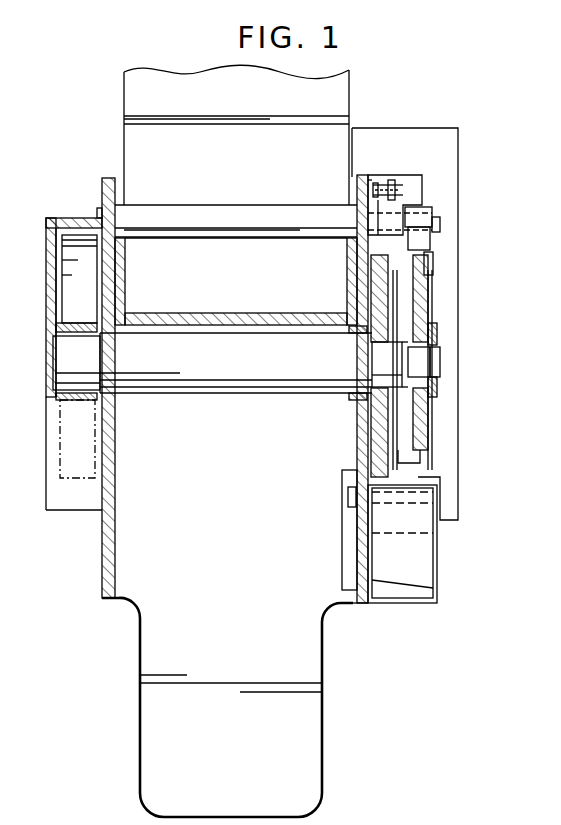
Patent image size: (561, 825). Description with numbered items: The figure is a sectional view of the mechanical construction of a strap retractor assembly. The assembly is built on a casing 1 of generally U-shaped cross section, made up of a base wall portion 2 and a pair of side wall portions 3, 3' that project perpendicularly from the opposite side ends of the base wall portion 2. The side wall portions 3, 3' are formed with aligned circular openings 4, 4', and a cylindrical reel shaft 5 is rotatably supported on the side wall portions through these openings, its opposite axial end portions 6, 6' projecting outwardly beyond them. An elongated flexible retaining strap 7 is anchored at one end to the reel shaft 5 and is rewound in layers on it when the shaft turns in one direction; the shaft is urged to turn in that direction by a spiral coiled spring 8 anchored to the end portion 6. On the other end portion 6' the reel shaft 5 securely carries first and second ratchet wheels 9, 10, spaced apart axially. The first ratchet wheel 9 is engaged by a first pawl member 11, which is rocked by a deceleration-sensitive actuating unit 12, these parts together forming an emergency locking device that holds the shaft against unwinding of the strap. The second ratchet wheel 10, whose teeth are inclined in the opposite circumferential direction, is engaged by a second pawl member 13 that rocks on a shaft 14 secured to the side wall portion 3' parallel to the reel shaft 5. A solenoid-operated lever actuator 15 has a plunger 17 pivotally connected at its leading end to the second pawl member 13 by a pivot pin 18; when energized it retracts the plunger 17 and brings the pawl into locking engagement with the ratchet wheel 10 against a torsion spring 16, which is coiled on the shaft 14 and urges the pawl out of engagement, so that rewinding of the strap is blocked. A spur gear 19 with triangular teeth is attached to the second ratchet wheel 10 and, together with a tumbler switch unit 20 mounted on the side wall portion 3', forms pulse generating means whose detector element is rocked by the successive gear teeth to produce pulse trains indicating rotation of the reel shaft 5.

The casing 1 is at (125, 623).
The base wall portion 2 is at (224, 634).
The side wall portion 3 is at (91, 388).
The side wall portion 3' is at (370, 410).
The circular opening 4 is at (100, 340).
The circular opening 4' is at (345, 341).
The reel shaft 5 is at (218, 395).
The axial end portion 6 is at (76, 435).
The axial end portion 6' is at (343, 410).
The retaining strap 7 is at (230, 167).
The spiral coiled spring 8 is at (76, 232).
The first ratchet wheel 9 is at (372, 447).
The second ratchet wheel 10 is at (434, 258).
The first pawl member 11 is at (405, 462).
The deceleration-sensitive actuating unit 12 is at (458, 393).
The second pawl member 13 is at (432, 244).
The shaft 14 is at (441, 213).
The solenoid-operated lever actuator 15 is at (401, 170).
The torsion spring 16 is at (418, 213).
The plunger 17 is at (393, 175).
The pivot pin 18 is at (410, 192).
The spur gear 19 is at (432, 290).
The tumbler switch unit 20 is at (443, 520).